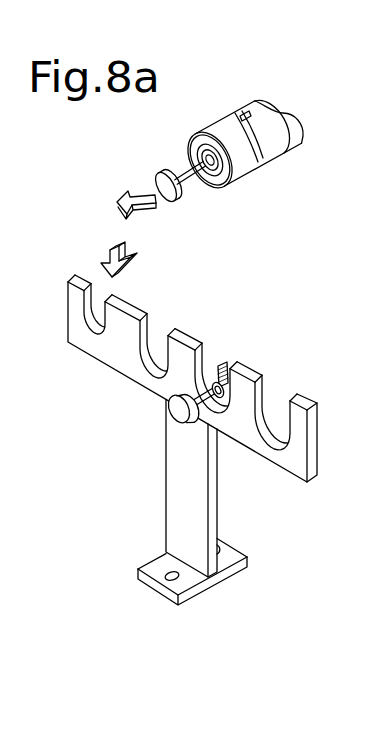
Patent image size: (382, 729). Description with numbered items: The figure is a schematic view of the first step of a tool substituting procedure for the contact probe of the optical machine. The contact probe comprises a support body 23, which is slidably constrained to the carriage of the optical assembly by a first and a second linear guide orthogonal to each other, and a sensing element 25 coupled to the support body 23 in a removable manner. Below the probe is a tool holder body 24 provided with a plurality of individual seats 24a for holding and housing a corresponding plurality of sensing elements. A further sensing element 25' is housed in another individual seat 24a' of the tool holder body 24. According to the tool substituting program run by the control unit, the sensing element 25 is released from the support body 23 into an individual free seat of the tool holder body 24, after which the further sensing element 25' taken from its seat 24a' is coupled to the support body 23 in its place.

The support body 23 is at (219, 111).
The sensing element 25 is at (161, 126).
The tool holder body 24 is at (272, 533).
The individual seat 24a is at (234, 339).
The individual seat 24a' is at (236, 323).
The further sensing element 25' is at (156, 447).